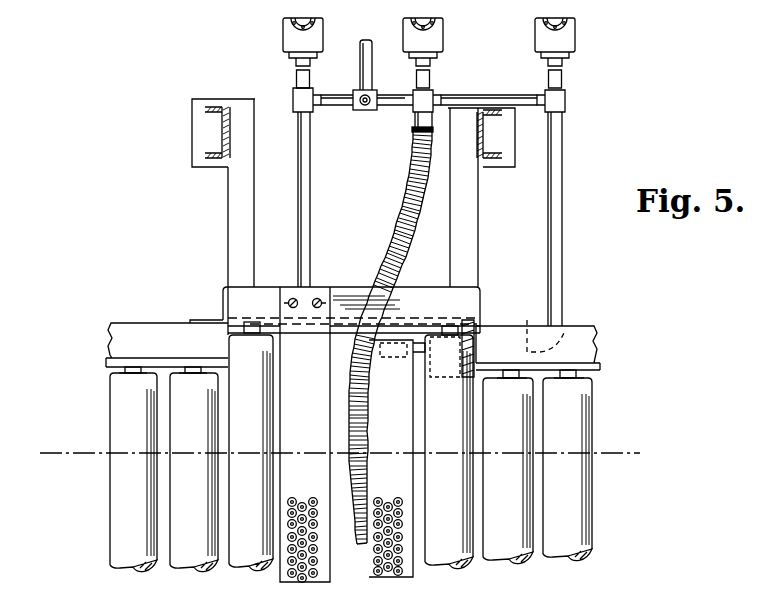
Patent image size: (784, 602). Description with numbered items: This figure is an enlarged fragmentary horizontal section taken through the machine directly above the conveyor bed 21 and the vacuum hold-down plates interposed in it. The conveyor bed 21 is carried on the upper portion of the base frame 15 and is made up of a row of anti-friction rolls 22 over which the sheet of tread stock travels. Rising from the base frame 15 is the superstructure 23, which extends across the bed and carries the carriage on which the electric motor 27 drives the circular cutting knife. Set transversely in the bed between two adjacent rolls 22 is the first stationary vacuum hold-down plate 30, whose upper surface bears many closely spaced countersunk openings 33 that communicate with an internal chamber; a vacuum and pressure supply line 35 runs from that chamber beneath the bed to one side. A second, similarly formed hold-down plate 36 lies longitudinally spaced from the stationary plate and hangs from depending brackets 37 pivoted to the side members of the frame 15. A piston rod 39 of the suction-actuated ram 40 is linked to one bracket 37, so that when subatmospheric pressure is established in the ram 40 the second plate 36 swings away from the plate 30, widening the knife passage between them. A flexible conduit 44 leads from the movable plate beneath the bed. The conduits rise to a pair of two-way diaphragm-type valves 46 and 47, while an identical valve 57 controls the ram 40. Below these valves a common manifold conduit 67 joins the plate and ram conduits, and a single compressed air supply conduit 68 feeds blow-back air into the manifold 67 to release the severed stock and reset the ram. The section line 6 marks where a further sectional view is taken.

The section line 6- 6 is at (339, 453).
The base frame 15 is at (190, 319).
The conveyor bed 21 is at (108, 389).
The anti-friction rolls 22 is at (560, 417).
The superstructure 23 is at (212, 146).
The electric motor 27 is at (433, 601).
The first stationary vacuum hold-down plate 30 is at (305, 434).
The countersunk openings 33 is at (377, 561).
The vacuum and pressure supply line 35 is at (306, 192).
The second hold-down plate 36 is at (397, 458).
The supporting brackets 37 is at (400, 358).
The piston rod 39 is at (434, 352).
The suction-actuated ram 40 is at (535, 327).
The flexible conduit 44 is at (400, 243).
The two-way diaphragm-type valve 46 is at (289, 40).
The two-way diaphragm-type valve 47 is at (436, 41).
The valve 57 is at (568, 43).
The common manifold conduit 67 is at (391, 108).
The compressed air supply conduit 68 is at (372, 48).